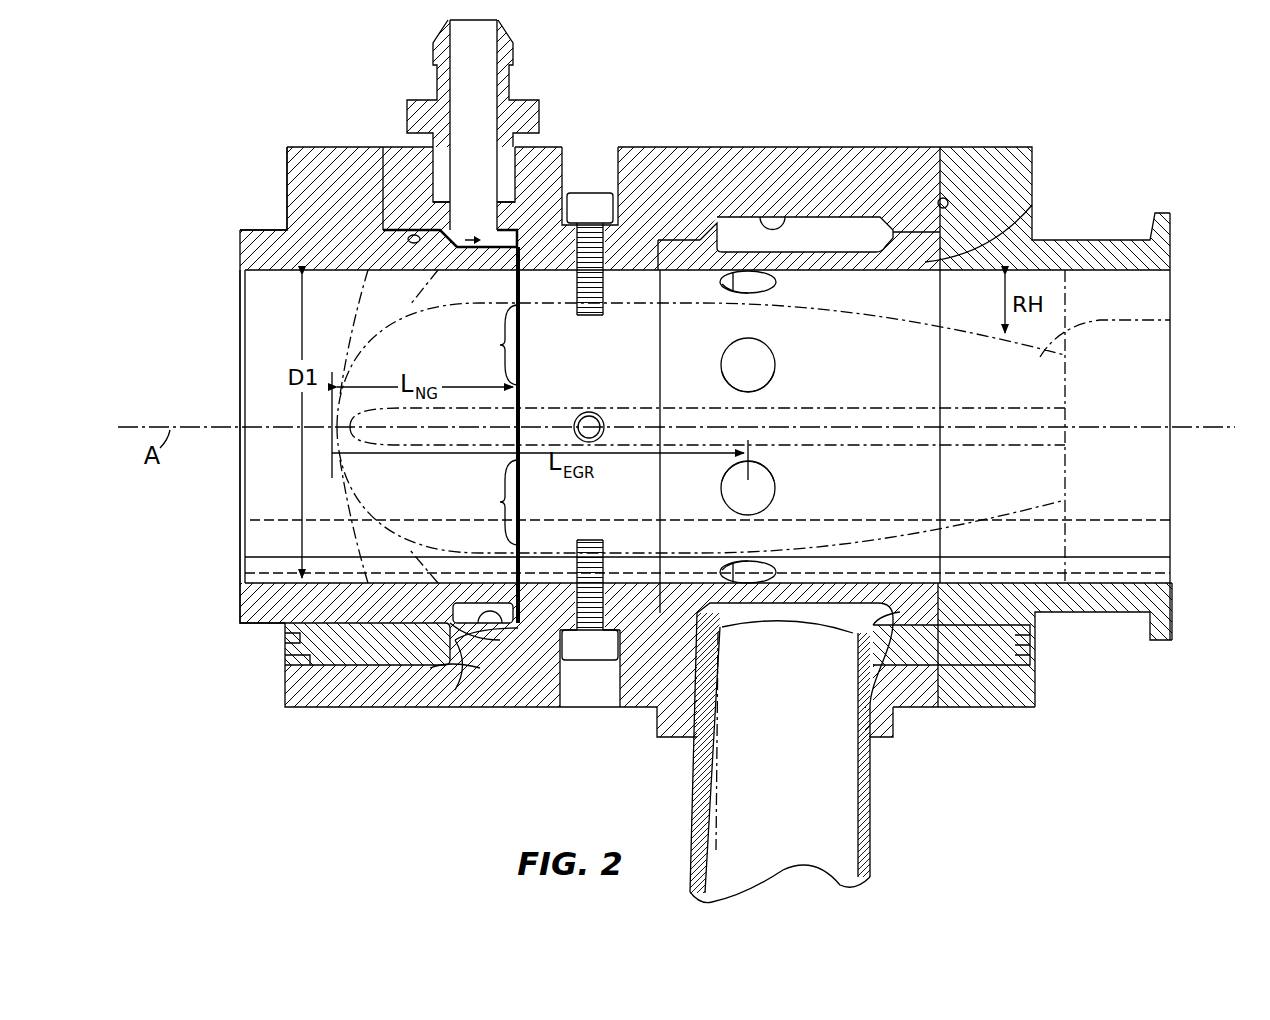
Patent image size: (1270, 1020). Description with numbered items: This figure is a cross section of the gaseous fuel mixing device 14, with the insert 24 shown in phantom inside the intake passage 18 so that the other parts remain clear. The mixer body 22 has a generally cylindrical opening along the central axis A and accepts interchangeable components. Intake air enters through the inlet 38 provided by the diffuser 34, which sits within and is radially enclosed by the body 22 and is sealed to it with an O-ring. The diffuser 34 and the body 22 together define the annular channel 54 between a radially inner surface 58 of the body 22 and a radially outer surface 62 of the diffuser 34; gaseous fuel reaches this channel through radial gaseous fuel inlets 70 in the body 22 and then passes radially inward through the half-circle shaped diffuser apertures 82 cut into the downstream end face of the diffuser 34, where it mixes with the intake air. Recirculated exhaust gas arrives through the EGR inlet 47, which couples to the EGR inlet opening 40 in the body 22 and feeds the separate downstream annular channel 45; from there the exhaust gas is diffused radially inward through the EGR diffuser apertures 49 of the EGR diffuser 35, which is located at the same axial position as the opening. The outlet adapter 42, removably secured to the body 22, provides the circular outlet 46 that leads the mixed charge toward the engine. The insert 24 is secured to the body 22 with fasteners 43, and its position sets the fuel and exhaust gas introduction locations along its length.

The gaseous fuel mixing device 14 is at (148, 172).
The intake passage 18 is at (265, 272).
The body 22 is at (914, 172).
The insert 24 is at (1172, 322).
The diffuser 34 is at (265, 628).
The EGR diffuser 35 is at (1032, 217).
The inlet 38 is at (240, 583).
The EGR inlet opening 40 is at (705, 700).
The outlet adapter 42 is at (1100, 600).
The fasteners 43 is at (598, 205).
The downstream annular channel 45 is at (830, 236).
The outlet 46 is at (1172, 580).
The EGR inlet 47 is at (868, 765).
The EGR diffuser apertures 49 is at (770, 468).
The annular channel 54 is at (470, 238).
The radially inner surface 58 is at (768, 228).
The radially outer surface 62 is at (450, 650).
The gaseous fuel inlets 70 is at (487, 215).
The diffuser apertures 82 is at (500, 345).